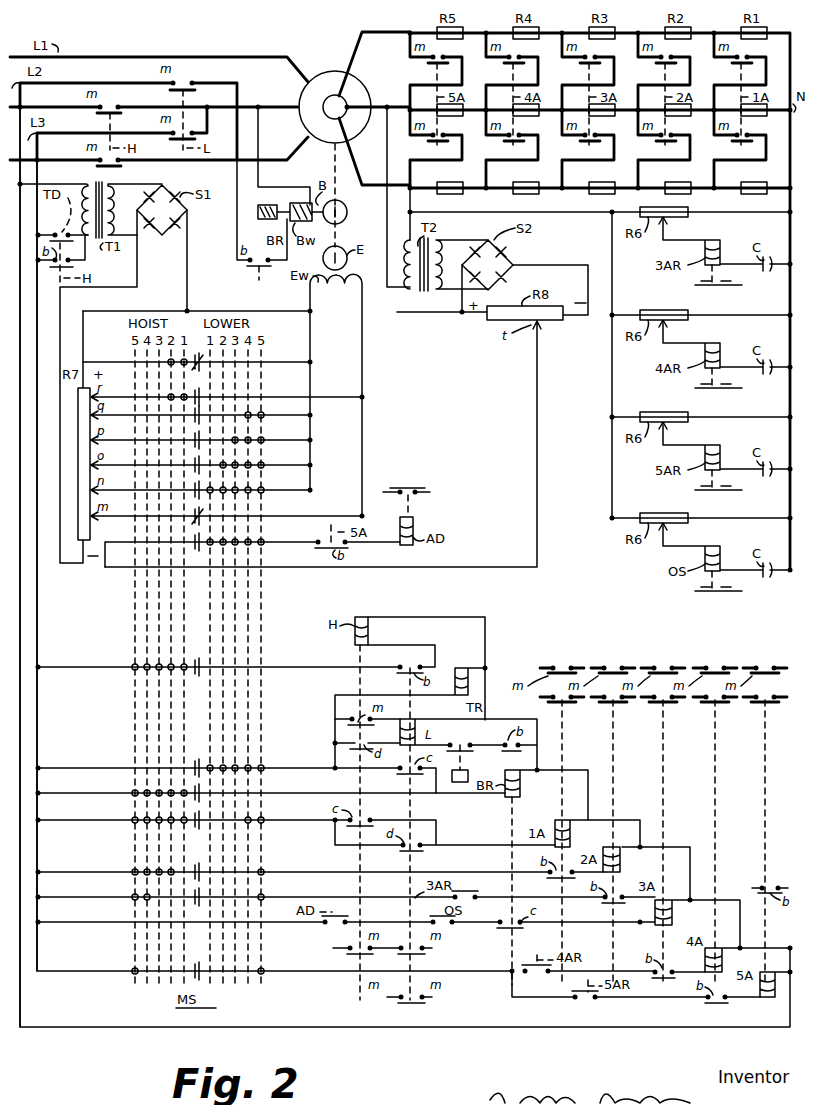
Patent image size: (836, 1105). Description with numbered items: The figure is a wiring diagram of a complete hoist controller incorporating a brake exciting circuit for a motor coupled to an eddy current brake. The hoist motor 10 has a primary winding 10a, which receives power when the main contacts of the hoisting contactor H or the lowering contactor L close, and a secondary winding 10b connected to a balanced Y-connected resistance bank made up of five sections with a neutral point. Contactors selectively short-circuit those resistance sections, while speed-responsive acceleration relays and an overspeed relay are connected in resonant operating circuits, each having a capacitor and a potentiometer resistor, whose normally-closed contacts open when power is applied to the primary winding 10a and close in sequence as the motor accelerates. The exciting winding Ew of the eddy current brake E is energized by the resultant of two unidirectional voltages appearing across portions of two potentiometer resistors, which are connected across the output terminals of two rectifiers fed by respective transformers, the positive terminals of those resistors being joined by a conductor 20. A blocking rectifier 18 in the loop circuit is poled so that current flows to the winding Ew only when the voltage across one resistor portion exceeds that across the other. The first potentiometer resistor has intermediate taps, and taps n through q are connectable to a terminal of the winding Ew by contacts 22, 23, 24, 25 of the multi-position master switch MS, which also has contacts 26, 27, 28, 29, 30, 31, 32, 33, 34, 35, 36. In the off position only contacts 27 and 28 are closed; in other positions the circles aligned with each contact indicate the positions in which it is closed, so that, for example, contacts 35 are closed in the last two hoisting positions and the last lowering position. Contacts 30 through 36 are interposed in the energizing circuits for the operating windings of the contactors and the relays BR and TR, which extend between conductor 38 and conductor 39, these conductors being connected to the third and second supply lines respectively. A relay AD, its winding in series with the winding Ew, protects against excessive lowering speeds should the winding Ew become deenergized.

The hoist motor 10 is at (349, 97).
The primary winding 10a is at (312, 75).
The secondary winding 10b is at (346, 102).
The blocking rectifier 18 is at (490, 560).
The conductor 20 is at (397, 312).
The master switch contact 22 is at (205, 486).
The master switch contact 23 is at (205, 461).
The master switch contact 24 is at (205, 436).
The master switch contact 25 is at (205, 411).
The master switch contact 26 is at (205, 393).
The master switch contact 27 is at (205, 359).
The master switch contact 28 is at (205, 512).
The master switch contact 29 is at (205, 538).
The master switch contact 30 is at (205, 664).
The master switch contact 31 is at (205, 764).
The master switch contact 32 is at (205, 789).
The master switch contact 33 is at (205, 816).
The master switch contact 34 is at (205, 868).
The master switch contact 35 is at (205, 893).
The master switch contact 36 is at (205, 967).
The conductor 38 is at (38, 725).
The conductor 39 is at (20, 1010).